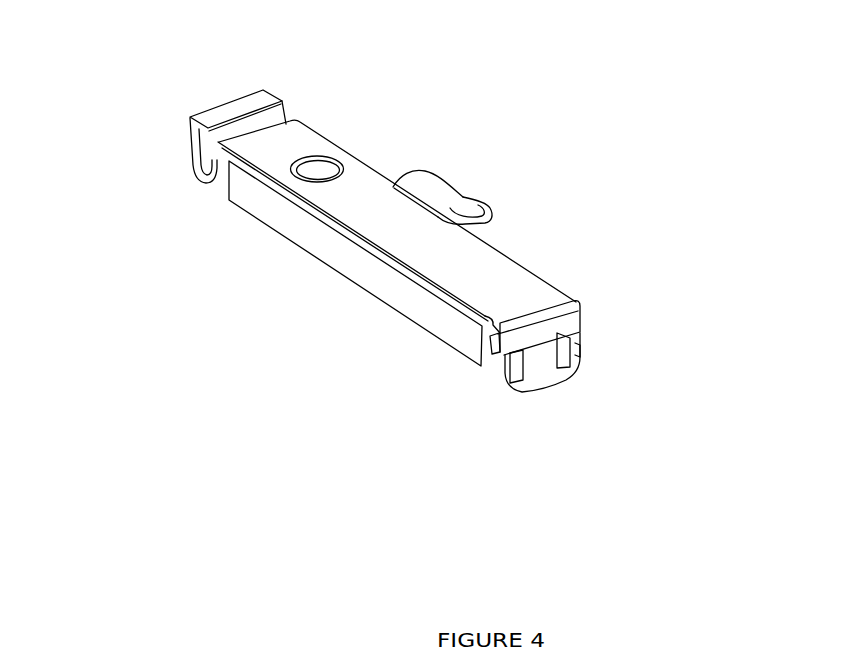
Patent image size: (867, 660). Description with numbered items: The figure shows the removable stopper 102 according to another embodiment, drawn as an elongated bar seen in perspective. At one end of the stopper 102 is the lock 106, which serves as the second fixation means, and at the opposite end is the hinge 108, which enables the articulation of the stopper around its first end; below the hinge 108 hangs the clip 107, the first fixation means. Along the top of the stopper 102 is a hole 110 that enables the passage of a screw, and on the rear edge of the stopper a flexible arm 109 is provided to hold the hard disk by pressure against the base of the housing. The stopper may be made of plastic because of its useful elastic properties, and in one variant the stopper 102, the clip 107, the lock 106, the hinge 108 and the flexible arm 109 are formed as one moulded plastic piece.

The mounting bracket body 102 is at (323, 273).
The lock 106 is at (195, 162).
The clip 107 is at (540, 377).
The hinge 108 is at (558, 308).
The flexible arm 109 is at (458, 187).
The hole 110 is at (323, 162).